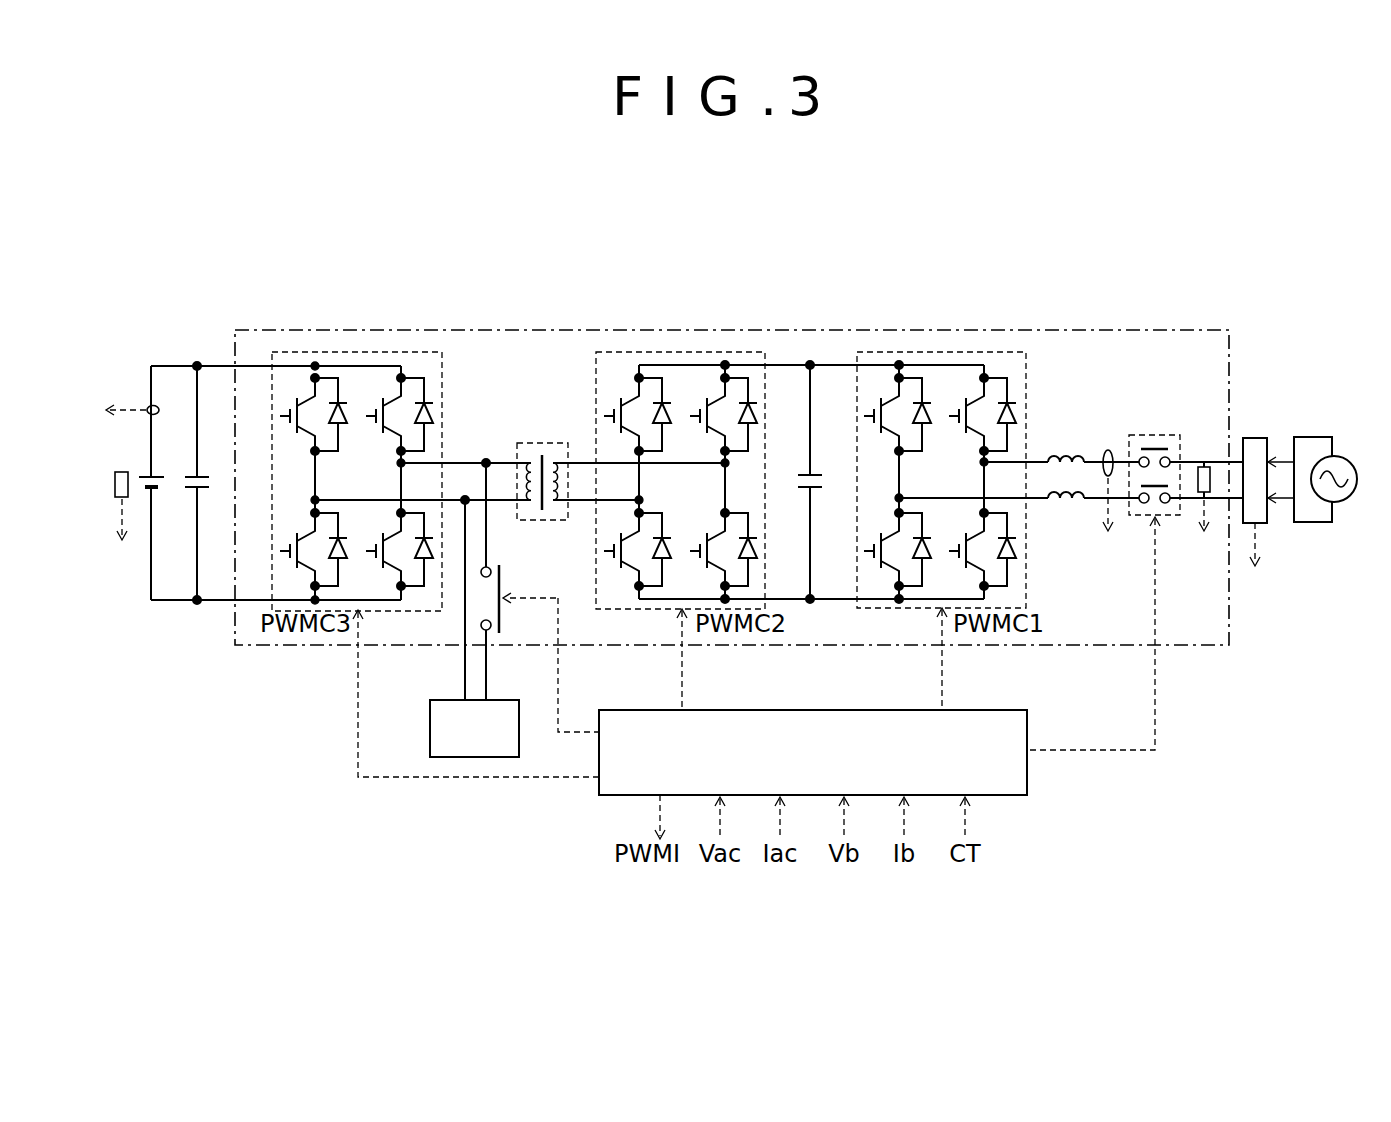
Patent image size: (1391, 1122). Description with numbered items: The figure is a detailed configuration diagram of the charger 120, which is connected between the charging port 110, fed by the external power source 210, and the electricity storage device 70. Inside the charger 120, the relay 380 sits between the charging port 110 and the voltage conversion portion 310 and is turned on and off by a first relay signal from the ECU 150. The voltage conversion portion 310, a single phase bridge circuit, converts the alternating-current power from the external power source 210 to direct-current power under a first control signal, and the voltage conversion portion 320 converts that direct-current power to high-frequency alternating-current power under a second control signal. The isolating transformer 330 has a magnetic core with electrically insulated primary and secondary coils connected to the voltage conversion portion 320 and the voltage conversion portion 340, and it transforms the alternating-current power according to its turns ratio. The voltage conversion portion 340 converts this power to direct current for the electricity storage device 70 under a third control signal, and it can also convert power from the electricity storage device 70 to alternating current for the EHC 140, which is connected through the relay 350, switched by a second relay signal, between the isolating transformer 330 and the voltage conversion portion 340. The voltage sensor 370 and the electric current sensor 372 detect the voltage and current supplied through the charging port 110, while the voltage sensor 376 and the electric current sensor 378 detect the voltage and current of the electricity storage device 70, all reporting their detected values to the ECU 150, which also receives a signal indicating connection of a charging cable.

The electricity storage device 70 is at (156, 476).
The charging port 110 is at (1255, 438).
The charger 120 is at (1075, 330).
The EHC 140 is at (430, 728).
The ECU 150 is at (797, 710).
The external power source 210 is at (1340, 456).
The voltage conversion portion 310 is at (940, 352).
The voltage conversion portion 320 is at (680, 352).
The isolating transformer 330 is at (540, 443).
The voltage conversion portion 340 is at (355, 352).
The relay 350 is at (502, 582).
The voltage sensor 370 is at (1203, 467).
The electric current sensor 372 is at (1103, 450).
The voltage sensor 376 is at (114, 481).
The electric current sensor 378 is at (148, 408).
The relay 380 is at (1155, 435).